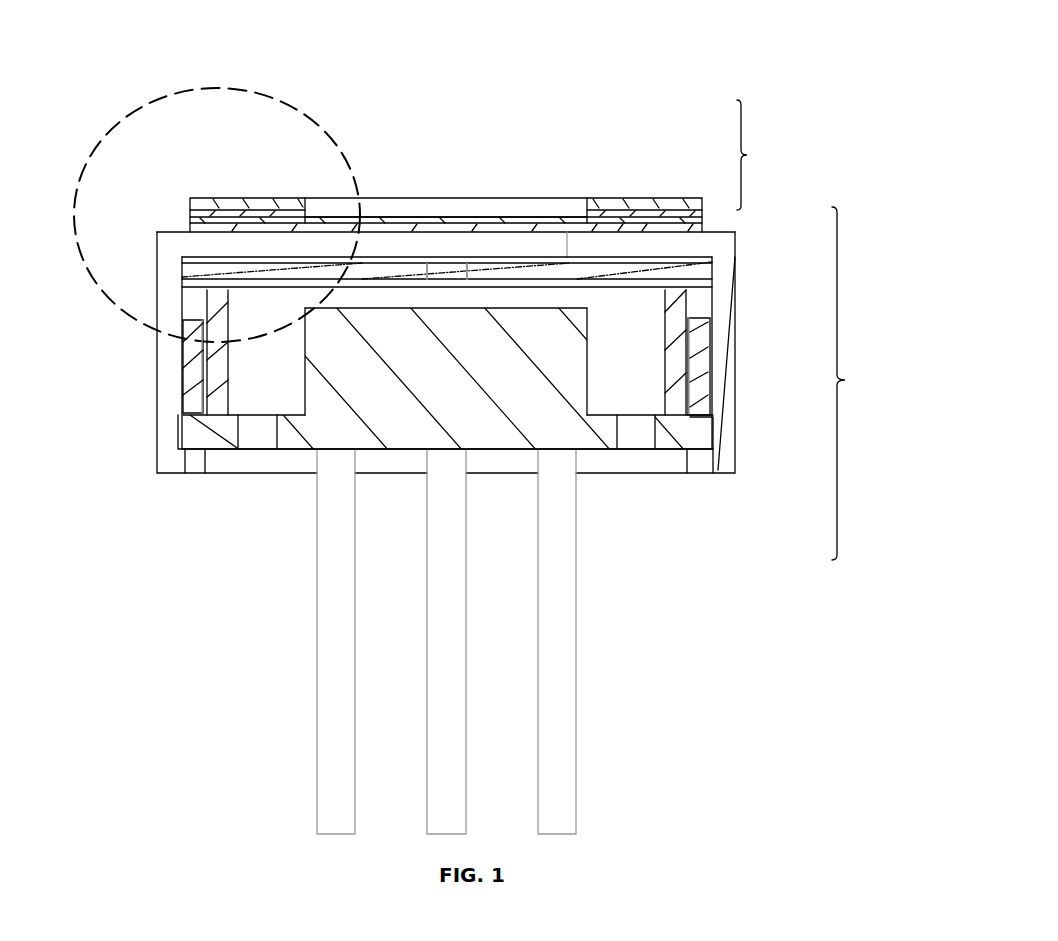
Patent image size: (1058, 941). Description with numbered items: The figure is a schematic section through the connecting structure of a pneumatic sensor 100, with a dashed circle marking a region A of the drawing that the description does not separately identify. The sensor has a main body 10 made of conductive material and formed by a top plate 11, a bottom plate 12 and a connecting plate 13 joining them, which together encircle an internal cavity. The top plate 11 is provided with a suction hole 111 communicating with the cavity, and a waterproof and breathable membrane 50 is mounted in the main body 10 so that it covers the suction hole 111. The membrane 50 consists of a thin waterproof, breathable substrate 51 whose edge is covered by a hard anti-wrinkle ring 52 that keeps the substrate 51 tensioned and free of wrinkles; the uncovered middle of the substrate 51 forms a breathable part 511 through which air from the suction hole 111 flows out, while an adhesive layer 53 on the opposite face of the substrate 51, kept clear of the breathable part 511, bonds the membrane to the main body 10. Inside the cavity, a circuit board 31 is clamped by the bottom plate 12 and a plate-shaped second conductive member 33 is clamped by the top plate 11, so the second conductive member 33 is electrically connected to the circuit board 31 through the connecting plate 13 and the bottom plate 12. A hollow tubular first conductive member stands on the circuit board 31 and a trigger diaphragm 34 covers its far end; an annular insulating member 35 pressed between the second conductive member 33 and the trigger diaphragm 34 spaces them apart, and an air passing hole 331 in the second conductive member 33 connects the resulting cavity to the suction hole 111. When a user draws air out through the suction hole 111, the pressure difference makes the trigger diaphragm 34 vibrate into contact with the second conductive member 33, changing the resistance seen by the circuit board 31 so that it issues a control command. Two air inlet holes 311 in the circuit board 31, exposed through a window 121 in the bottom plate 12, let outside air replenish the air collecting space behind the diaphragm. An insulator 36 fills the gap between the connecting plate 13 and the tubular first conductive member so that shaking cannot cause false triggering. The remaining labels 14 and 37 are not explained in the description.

The pneumatic sensor 100 is at (872, 48).
The enlarged region A is at (180, 92).
The main body 10 is at (516, 520).
The top plate 11 is at (712, 255).
The bottom plate 12 is at (703, 468).
The connecting plate 13 is at (725, 368).
The inner wall / accommodating cavity 14 is at (700, 308).
The window 121 is at (514, 475).
The suction hole 111 is at (378, 233).
The waterproof and breathable membrane 50 is at (481, 166).
The substrate 51 is at (637, 218).
The anti-wrinkle ring 52 is at (613, 210).
The adhesive layer 53 is at (667, 215).
The breathable part 511 is at (533, 216).
The second conductive member 33 is at (325, 290).
The air passing hole 331 is at (447, 258).
The trigger diaphragm 34 is at (500, 290).
The insulating member 35 is at (262, 292).
The insulator 36 is at (193, 397).
The gap space 37 is at (240, 370).
The circuit board 31 is at (200, 437).
The air inlet hole 311 is at (253, 436).